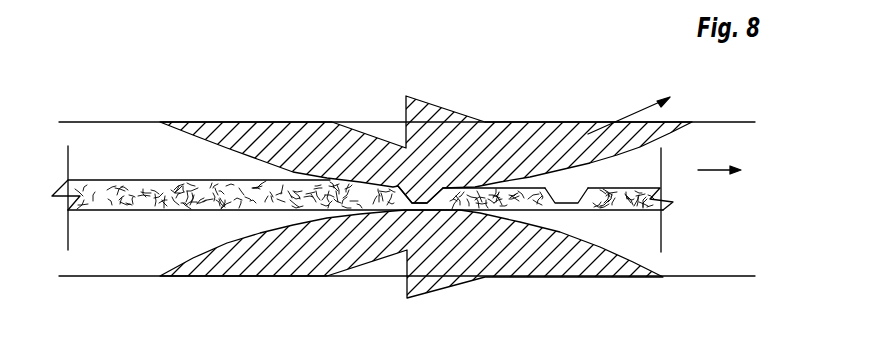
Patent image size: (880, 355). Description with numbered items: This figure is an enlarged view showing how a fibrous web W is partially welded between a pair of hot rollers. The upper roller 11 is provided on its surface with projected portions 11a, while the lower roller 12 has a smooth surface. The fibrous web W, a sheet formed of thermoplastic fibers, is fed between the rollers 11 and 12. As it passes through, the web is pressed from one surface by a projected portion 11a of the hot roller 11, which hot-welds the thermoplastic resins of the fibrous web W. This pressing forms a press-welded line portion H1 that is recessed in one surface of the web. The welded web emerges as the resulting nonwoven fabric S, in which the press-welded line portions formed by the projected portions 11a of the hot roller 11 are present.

The hot roller 11 is at (637, 128).
The roller 12 is at (640, 270).
The projected portions 11a is at (420, 196).
The fibrous web W is at (165, 198).
The nonwoven fabric S is at (168, 209).
The press-welded line portion H1 is at (564, 203).